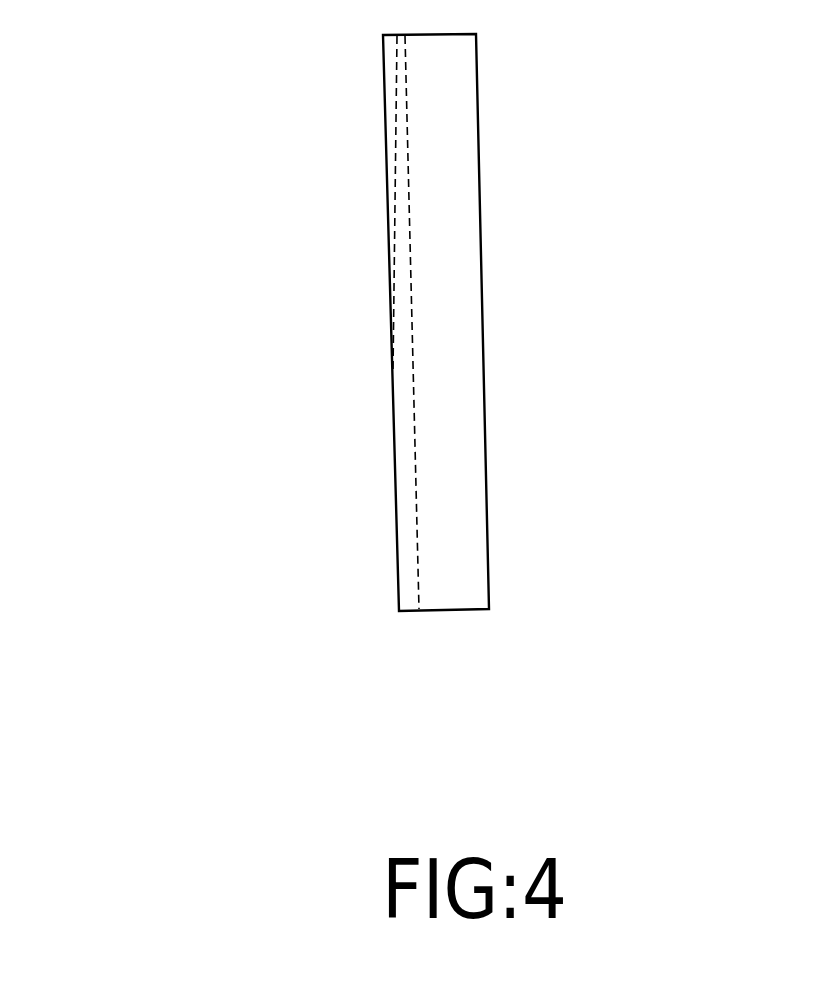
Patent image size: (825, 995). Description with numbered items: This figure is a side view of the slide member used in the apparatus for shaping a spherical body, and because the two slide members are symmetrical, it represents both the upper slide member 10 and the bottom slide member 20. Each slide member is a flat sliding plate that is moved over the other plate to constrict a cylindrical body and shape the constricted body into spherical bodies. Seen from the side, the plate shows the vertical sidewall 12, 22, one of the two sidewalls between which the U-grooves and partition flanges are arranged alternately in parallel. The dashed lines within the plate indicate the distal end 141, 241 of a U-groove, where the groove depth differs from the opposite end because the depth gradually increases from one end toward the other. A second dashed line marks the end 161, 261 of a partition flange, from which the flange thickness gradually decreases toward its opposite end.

The upper slide member 10 is at (418, 322).
The bottom slide member 20 is at (418, 322).
The vertical sidewall 12 is at (580, 320).
The vertical sidewall 22 is at (457, 566).
The distal end of U-groove 141 is at (587, 322).
The distal end of U-groove 241 is at (409, 172).
The end of partition flange 161 is at (578, 204).
The end of partition flange 261 is at (397, 105).